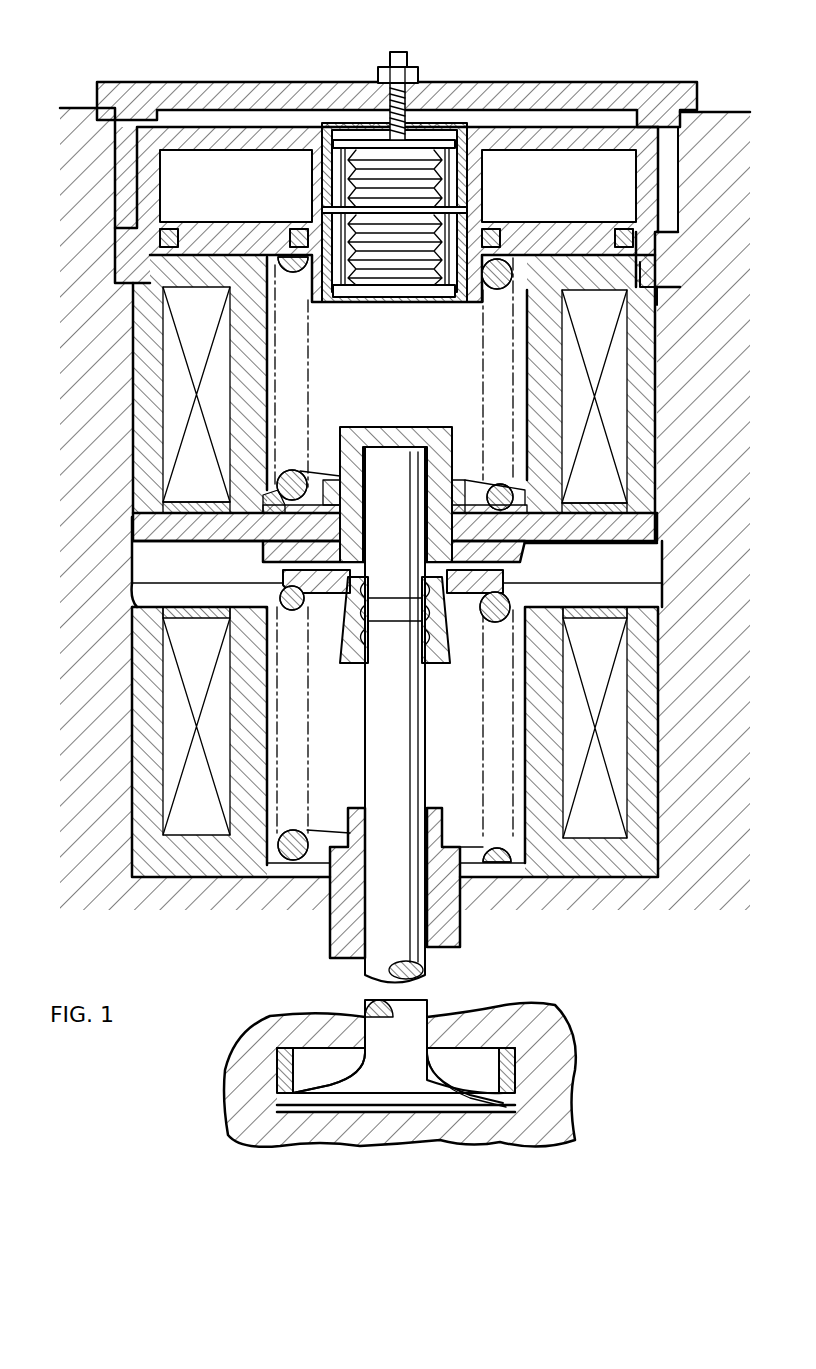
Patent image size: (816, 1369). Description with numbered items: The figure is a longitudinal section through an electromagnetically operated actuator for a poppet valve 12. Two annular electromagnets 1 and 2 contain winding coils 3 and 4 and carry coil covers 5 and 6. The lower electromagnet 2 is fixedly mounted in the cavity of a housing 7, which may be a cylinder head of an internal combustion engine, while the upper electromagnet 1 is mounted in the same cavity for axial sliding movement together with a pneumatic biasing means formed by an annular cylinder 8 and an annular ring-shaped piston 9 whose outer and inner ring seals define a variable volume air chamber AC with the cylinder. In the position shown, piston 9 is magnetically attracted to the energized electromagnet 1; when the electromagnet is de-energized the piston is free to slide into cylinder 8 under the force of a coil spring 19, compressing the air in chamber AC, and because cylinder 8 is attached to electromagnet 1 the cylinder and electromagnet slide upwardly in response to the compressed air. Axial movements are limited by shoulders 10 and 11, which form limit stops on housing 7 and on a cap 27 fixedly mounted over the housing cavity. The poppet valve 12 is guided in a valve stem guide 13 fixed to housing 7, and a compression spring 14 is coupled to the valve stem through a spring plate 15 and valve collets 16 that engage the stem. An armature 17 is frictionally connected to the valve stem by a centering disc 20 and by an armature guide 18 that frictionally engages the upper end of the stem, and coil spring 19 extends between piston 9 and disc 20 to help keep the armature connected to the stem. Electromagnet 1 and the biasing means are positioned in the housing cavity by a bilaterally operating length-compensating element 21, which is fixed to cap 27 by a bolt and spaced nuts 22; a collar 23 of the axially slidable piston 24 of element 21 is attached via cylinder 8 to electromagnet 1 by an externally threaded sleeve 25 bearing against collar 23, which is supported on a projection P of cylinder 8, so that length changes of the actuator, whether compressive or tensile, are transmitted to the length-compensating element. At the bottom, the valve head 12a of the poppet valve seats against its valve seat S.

The annular electromagnet 1 is at (425, 398).
The annular electromagnet 2 is at (430, 742).
The winding coil 3 is at (620, 380).
The winding coil 4 is at (620, 797).
The coil cover 5 is at (625, 500).
The coil cover 6 is at (613, 620).
The housing 7 is at (675, 565).
The annular cylinder 8 is at (667, 250).
The annular ring-shaped piston 9 is at (595, 243).
The shoulder 10 is at (667, 293).
The shoulder 11 is at (660, 120).
The poppet valve 12 is at (417, 960).
The valve head 12a is at (427, 1113).
The valve stem guide 13 is at (333, 933).
The compression spring 14 is at (273, 867).
The spring plate 15 is at (298, 582).
The valve collets 16 is at (338, 650).
The armature 17 is at (178, 528).
The armature guide 18 is at (260, 547).
The coil spring 19 is at (287, 470).
The centering disc 20 is at (262, 500).
The length-compensating element 21 is at (427, 160).
The bolt and spaced nuts 22 is at (417, 67).
The collar 23 is at (463, 212).
The axially slidable piston 24 is at (382, 210).
The externally threaded sleeve 25 is at (343, 130).
The cap 27 is at (223, 82).
The air chamber AC is at (567, 163).
The projection P is at (327, 302).
The valve seat S is at (473, 1047).